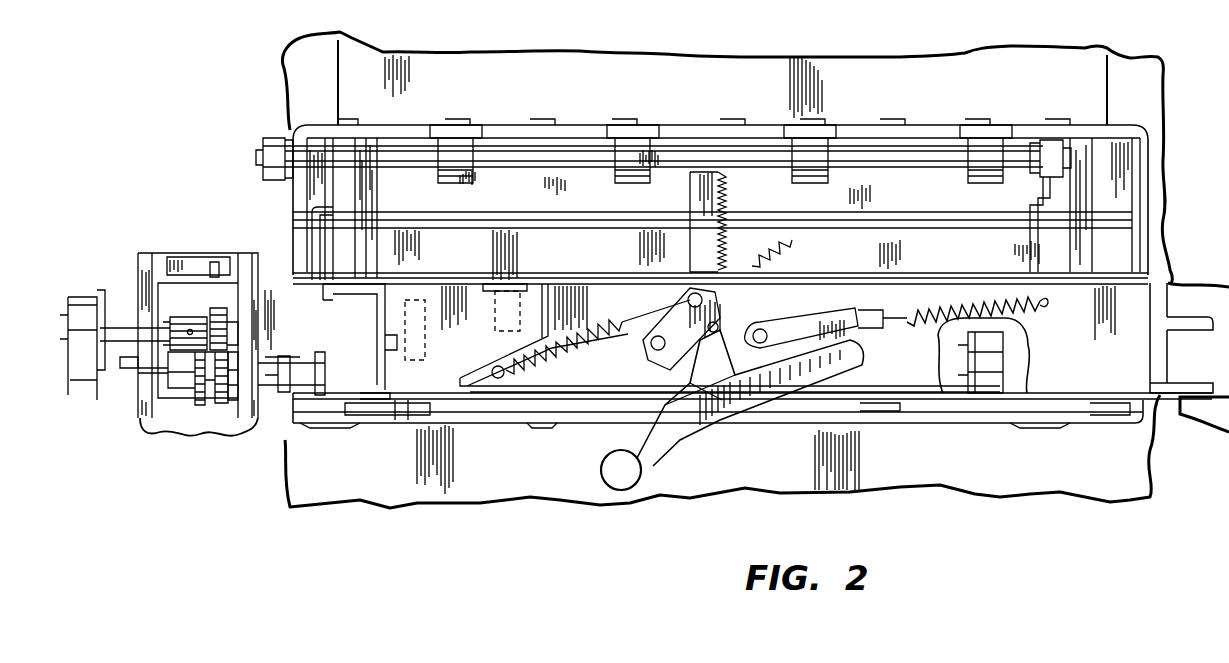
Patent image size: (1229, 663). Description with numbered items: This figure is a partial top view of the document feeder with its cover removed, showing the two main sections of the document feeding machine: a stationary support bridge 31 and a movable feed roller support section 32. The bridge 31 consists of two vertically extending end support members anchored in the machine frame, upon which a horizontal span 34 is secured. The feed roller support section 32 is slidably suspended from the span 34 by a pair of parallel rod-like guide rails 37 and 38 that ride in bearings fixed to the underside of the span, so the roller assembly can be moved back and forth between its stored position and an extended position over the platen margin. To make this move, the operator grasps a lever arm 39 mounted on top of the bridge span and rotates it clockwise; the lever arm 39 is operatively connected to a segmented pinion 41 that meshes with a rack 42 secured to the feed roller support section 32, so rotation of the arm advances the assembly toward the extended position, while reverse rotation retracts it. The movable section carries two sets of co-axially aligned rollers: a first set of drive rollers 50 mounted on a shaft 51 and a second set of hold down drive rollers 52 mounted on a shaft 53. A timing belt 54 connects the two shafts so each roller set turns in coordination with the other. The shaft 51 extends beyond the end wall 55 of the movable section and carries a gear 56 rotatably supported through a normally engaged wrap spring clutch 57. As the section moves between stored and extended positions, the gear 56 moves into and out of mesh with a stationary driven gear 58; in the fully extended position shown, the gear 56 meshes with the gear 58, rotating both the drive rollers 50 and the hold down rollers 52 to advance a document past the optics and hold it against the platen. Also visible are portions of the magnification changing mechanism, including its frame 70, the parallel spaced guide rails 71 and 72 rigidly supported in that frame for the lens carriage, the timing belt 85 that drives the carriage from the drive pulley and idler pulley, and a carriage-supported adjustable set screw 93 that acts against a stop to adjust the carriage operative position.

The stationary support bridge 31 is at (1150, 274).
The movable feed roller support section 32 is at (1148, 180).
The horizontal span 34 is at (1118, 358).
The guide rail 37 is at (372, 256).
The guide rail 38 is at (1090, 250).
The lever arm 39 is at (668, 442).
The segmented pinion 41 is at (796, 252).
The rack 42 is at (727, 187).
The drive rollers 50 is at (978, 395).
The shaft 51 is at (318, 342).
The hold down drive rollers 52 is at (473, 180).
The shaft 53 is at (580, 172).
The timing belt 54 is at (274, 207).
The end wall 55 is at (300, 226).
The gear 56 is at (198, 405).
The wrap spring clutch 57 is at (183, 382).
The stationary driven gear 58 is at (190, 317).
The frame 70 is at (228, 405).
The guide rail 71 is at (217, 310).
The guide rail 72 is at (258, 390).
The timing belt 85 is at (212, 262).
The adjustable set screw 93 is at (122, 327).